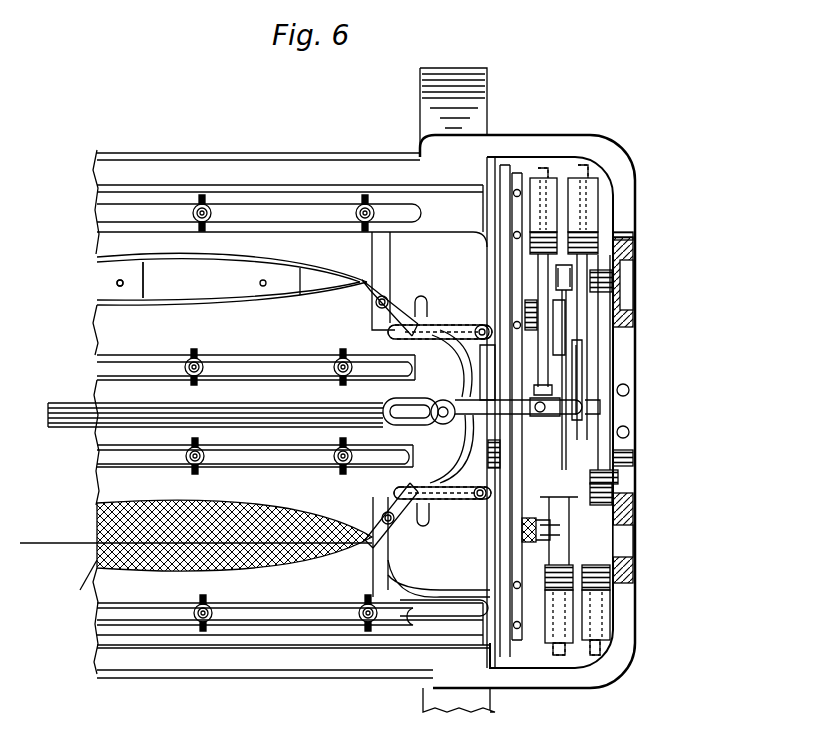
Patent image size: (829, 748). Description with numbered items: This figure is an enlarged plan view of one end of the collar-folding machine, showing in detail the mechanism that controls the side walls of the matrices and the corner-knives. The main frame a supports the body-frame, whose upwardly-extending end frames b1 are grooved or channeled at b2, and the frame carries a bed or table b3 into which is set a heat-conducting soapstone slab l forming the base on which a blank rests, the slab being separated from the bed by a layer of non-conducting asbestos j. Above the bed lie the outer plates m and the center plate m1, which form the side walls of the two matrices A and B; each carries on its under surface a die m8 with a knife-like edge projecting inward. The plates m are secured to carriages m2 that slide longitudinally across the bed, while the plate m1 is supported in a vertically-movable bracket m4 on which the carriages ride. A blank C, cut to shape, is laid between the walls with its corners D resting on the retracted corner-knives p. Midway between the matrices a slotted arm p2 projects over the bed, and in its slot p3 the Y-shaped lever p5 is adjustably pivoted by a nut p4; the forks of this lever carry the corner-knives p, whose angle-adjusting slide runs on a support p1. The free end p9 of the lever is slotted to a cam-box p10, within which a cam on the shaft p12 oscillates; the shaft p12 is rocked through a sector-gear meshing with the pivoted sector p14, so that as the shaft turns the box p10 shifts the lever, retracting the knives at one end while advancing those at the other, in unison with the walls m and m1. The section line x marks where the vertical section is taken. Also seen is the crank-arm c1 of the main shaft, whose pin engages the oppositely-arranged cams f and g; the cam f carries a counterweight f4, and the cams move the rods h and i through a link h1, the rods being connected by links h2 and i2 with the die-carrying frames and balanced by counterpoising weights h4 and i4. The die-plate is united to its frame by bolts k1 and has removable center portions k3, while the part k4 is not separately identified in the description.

The main frame a is at (478, 93).
The matrix A is at (196, 535).
The matrix B is at (47, 284).
The blank C is at (72, 577).
The corners of the blank D is at (341, 490).
The end frames b1 is at (610, 570).
The groove or channel b2 is at (622, 540).
The bed or table b3 is at (195, 660).
The crank-arm c1 is at (576, 370).
The cam f is at (590, 462).
The counterweight f4 is at (590, 207).
The cam g is at (560, 335).
The rod or lever h is at (582, 176).
The link h1 is at (605, 495).
The link h2 is at (605, 282).
The counterpoising weight h4 is at (603, 612).
The rod or lever i is at (543, 176).
The link i2 is at (525, 530).
The counterpoising weight i4 is at (568, 652).
The layer of non-conducting material j is at (155, 158).
The bolts and screws k1 is at (116, 287).
The center portions of die-plate k3 is at (133, 291).
The knife edge k4 is at (318, 292).
The heat-conducting slab l is at (390, 258).
The side-wall plates m is at (255, 197).
The center plate m1 is at (240, 350).
The carriage m2 is at (517, 265).
The vertically-movable bracket m4 is at (505, 605).
The die m8 is at (263, 505).
The corner-knives p is at (368, 293).
The support p1 is at (470, 315).
The slotted arm p2 is at (437, 395).
The slot p3 is at (395, 400).
The nut p4 is at (438, 422).
The forked lever p5 is at (472, 396).
The free end of lever p9 is at (600, 408).
The cam-box p10 is at (405, 500).
The shaft p12 is at (50, 412).
The pivoted sector p14 is at (462, 500).
The section line x is at (725, 410).